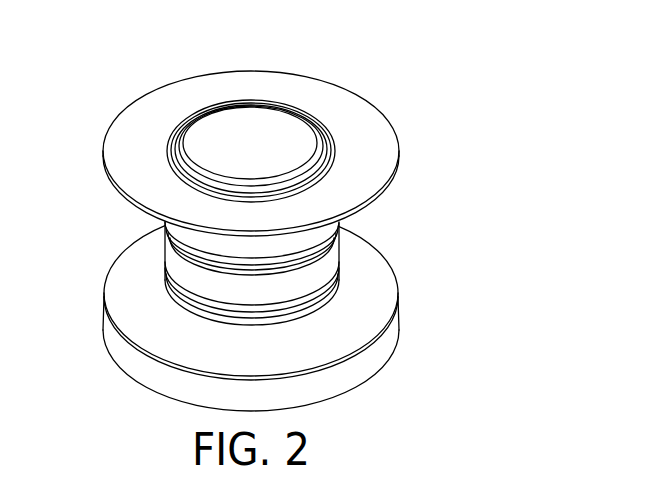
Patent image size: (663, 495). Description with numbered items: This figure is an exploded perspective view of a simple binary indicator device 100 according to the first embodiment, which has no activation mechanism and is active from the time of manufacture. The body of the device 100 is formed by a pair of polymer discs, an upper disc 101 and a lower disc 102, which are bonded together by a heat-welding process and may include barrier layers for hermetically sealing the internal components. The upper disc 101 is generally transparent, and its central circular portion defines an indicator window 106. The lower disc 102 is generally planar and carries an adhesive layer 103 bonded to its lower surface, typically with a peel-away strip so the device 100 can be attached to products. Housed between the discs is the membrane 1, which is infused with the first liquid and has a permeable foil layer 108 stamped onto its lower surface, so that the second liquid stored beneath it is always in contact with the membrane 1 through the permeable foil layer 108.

The binary indicator device 100 is at (418, 58).
The upper disc 101 is at (376, 143).
The lower disc 102 is at (383, 305).
The adhesive layer 103 is at (383, 350).
The indicator window 106 is at (245, 118).
The permeable foil layer 108 is at (338, 274).
The membrane 1 is at (165, 226).